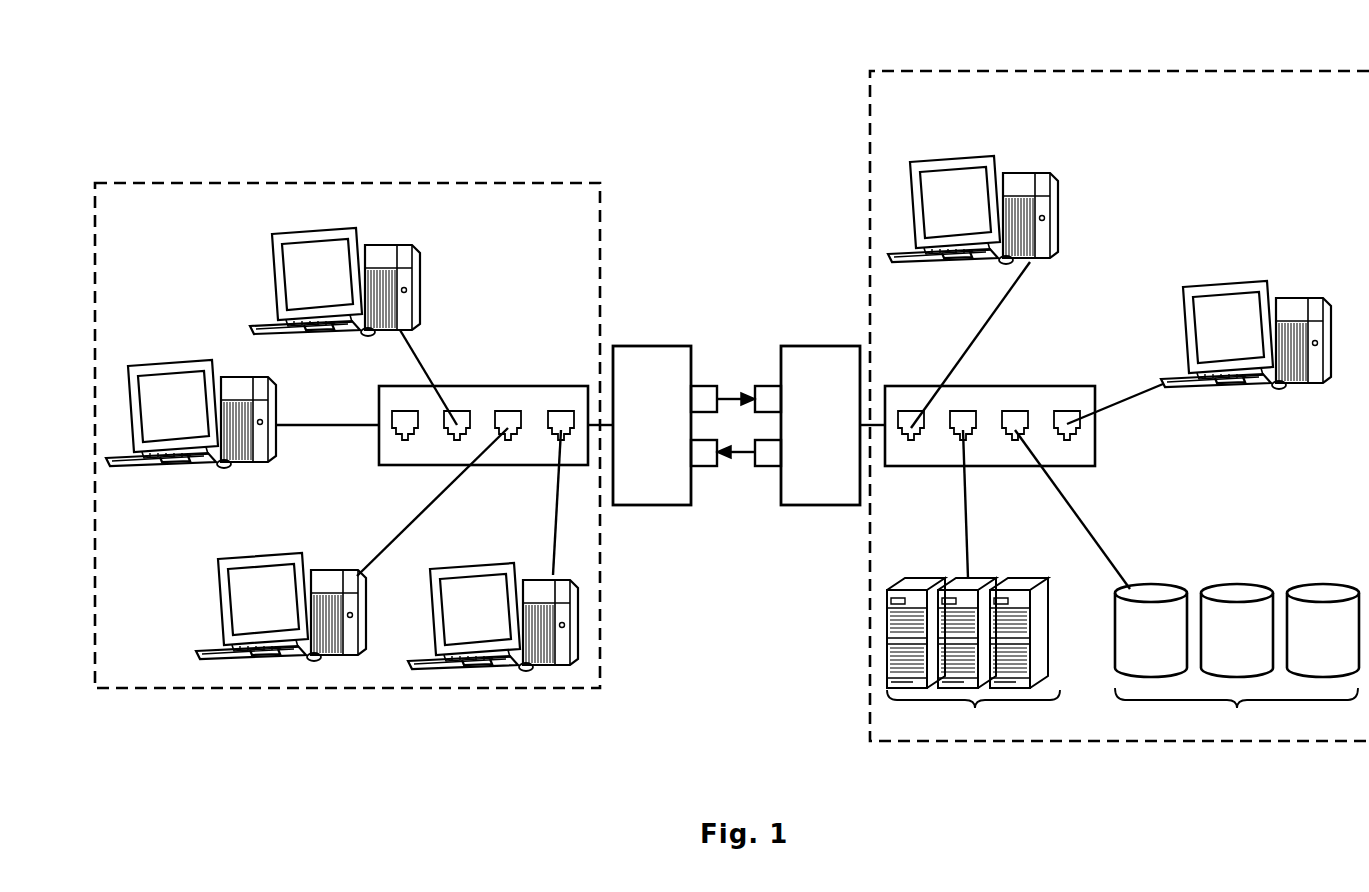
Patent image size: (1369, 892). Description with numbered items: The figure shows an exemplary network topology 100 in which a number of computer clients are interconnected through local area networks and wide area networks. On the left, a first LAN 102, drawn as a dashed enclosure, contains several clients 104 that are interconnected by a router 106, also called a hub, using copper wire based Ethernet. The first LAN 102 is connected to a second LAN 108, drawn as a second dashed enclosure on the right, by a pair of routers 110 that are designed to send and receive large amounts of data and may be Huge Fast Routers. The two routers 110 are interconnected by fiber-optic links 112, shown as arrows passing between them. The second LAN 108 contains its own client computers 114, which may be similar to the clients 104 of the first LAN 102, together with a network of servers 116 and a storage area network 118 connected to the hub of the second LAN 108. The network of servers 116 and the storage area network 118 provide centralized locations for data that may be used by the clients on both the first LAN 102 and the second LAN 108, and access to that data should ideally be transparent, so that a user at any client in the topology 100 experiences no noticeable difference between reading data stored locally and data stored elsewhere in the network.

The topology 100 is at (376, 53).
The first LAN 102 is at (338, 690).
The clients 104 is at (318, 230).
The router 106 is at (483, 386).
The second LAN 108 is at (1120, 743).
The routers 110 is at (655, 346).
The fiber-optic links 112 is at (737, 392).
The storage area network 114 is at (1035, 170).
The network of servers 116 is at (973, 582).
The storage devices 118 is at (1187, 582).